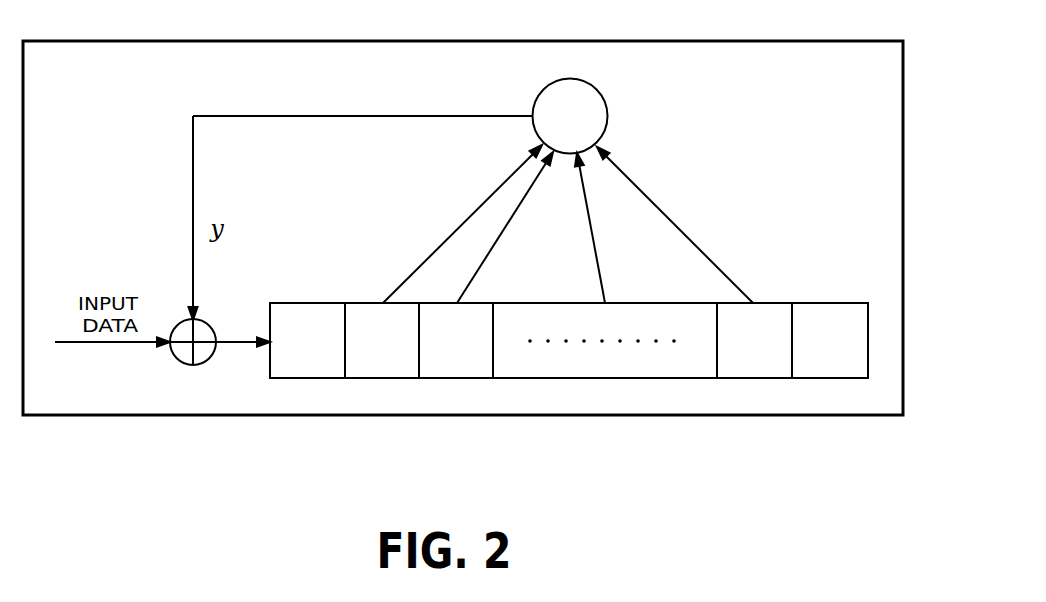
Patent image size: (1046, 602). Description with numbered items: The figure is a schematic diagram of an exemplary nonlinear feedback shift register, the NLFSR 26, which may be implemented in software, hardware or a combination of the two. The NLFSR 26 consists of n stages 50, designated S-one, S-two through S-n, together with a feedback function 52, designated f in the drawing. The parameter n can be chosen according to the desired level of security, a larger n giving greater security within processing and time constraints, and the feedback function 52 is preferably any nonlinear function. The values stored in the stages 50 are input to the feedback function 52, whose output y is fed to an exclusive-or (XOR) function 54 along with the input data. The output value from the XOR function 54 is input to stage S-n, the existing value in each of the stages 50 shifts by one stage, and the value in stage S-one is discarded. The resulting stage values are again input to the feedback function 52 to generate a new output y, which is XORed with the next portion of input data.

The NLFSR 26 is at (693, 41).
The stages 50 is at (535, 391).
The feedback function 52 is at (608, 117).
The exclusive-or (XOR) function 54 is at (178, 361).